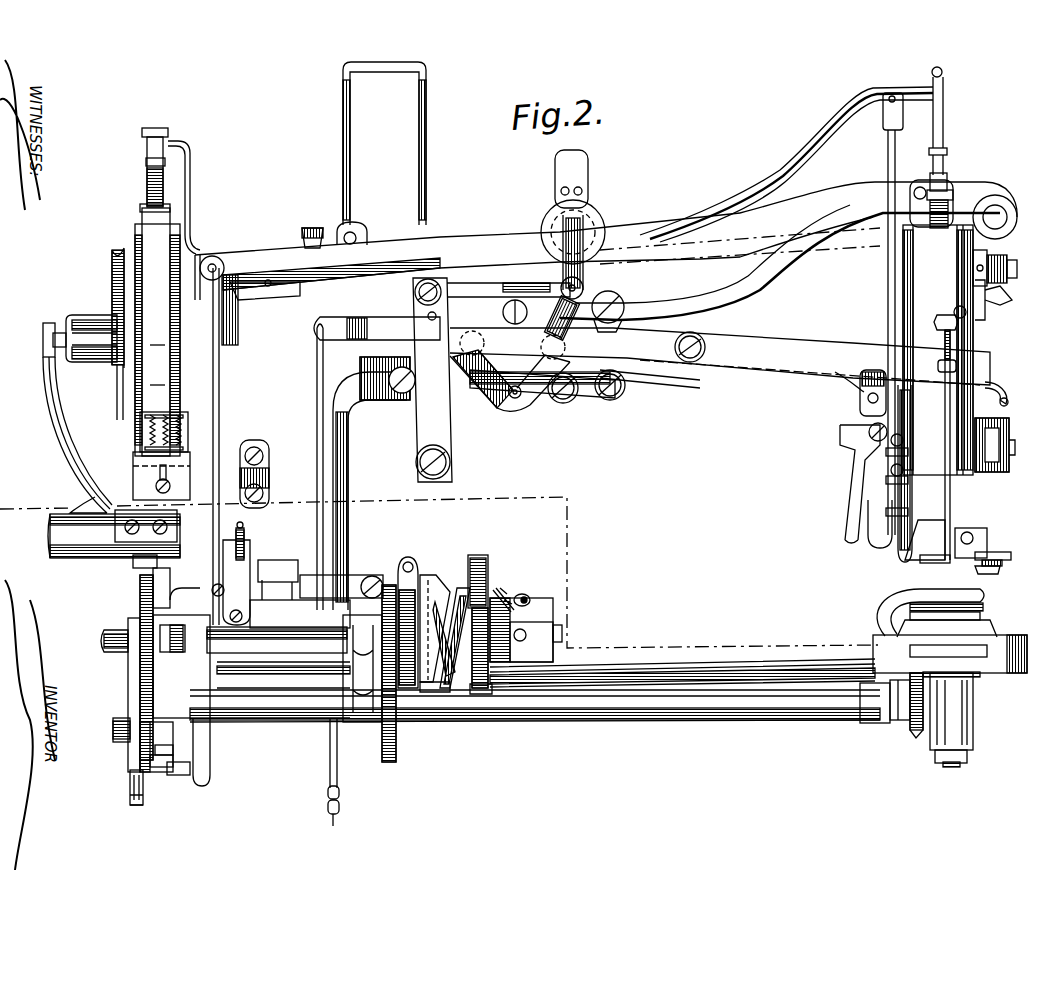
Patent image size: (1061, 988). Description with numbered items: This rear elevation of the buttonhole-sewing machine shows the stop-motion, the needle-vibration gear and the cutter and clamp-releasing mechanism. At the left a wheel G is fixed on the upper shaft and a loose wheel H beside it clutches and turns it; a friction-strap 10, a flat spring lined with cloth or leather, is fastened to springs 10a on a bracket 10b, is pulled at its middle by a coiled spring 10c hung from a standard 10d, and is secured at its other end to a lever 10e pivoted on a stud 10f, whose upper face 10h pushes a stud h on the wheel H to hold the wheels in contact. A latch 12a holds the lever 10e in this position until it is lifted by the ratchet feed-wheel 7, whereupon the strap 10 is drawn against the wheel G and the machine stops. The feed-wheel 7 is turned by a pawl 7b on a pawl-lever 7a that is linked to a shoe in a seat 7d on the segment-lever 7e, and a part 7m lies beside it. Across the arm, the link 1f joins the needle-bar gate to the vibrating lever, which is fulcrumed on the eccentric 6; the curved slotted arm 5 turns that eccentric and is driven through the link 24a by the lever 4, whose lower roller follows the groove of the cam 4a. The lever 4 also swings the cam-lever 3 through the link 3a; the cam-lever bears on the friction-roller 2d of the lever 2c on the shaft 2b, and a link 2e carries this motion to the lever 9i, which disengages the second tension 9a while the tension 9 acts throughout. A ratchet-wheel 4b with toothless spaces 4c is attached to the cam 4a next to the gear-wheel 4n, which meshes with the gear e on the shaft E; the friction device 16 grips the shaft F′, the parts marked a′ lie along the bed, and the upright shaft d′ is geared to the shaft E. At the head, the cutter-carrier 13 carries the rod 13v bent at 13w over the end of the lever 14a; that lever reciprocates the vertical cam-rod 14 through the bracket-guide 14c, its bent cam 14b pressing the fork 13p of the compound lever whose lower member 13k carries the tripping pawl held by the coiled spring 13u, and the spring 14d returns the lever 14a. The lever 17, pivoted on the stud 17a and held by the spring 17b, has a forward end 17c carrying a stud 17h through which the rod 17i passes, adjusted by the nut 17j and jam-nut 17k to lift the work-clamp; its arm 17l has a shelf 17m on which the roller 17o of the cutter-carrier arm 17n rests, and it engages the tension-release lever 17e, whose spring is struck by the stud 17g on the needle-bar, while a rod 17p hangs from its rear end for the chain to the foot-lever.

The cylindrical post 10 is at (160, 343).
The spring assembly 10a is at (142, 436).
The spring housing block 10b is at (134, 474).
The adjusting screw 10c is at (147, 186).
The bent rod 10d is at (178, 146).
The curved arm 10e is at (86, 540).
The lower block 10f is at (50, 548).
The hub 10h is at (53, 336).
The sleeve G is at (182, 224).
The frame flange H is at (118, 252).
The pin h is at (48, 326).
The vertical rod 14 is at (890, 291).
The curved connecting rod 14a is at (826, 128).
The rod 14b is at (222, 414).
The clamp 14c is at (890, 454).
The hinge bar 14d is at (240, 300).
The bracket 17p is at (270, 464).
The overhanging arm 1f is at (757, 236).
The guide loop 24a is at (470, 282).
The ring bracket 6 is at (582, 222).
The pivot 5 is at (590, 278).
The curved bar 9i is at (780, 262).
The link 4 is at (432, 380).
The horizontal bar 3a is at (456, 312).
The screw 2e is at (612, 324).
The link 2d is at (506, 404).
The pivot / needle plate 3 is at (520, 408).
The link 2c is at (565, 404).
The bar 2b is at (604, 402).
The lever 17 is at (720, 356).
The pivot screw 17a is at (692, 362).
The rod 17b is at (670, 374).
The ball end 13w is at (938, 66).
The rod 13v is at (945, 113).
The needle bar 13 is at (946, 180).
The head casing 9a is at (1008, 206).
The spool 9 is at (1000, 255).
The arm 17k is at (955, 305).
The latch 17e is at (1008, 300).
The nut 17j is at (976, 326).
The collar 17h is at (1000, 360).
The hook 17c is at (1002, 380).
The block 17i is at (996, 418).
The pivot block 17o is at (872, 378).
The vertical bar 17n is at (903, 392).
The link 17l is at (858, 400).
The bracket 17m is at (858, 410).
The loop 13p is at (869, 524).
The slide block 13k is at (985, 556).
The presser foot 13u is at (992, 566).
The cylinder d′ is at (958, 762).
The shaft a′ is at (678, 662).
The main shaft E is at (535, 718).
The shaft F′ is at (278, 659).
The gear e is at (392, 762).
The gear 4n is at (380, 576).
The lever 16 is at (412, 580).
The blade 4a is at (446, 590).
The gear 4c is at (484, 622).
The clamp 4b is at (483, 694).
The chain 17g is at (342, 804).
The support 12a is at (253, 585).
The bracket 7m is at (138, 588).
The gear 7 is at (130, 667).
The plate 7a is at (128, 700).
The box 7b is at (151, 746).
The part 7d is at (132, 784).
The part 7e is at (130, 802).